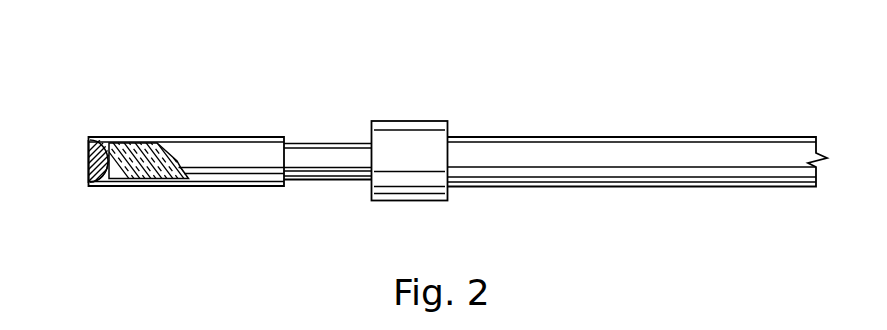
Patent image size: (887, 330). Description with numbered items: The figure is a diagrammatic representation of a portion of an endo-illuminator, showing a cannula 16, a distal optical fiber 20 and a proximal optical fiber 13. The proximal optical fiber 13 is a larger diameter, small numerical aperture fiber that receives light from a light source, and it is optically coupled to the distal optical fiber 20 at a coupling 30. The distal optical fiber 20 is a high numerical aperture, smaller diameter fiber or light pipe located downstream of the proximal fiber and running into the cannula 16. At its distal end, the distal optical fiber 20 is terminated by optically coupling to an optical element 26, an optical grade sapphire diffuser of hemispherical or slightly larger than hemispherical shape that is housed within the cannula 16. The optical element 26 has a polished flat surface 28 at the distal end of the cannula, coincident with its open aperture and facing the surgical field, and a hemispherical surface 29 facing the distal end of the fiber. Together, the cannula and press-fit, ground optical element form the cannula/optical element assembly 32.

The proximal optical fiber 13 is at (641, 137).
The cannula 16 is at (236, 137).
The distal optical fiber 20 is at (132, 136).
The optical element 26 is at (88, 141).
The polished flat surface 28 is at (88, 167).
The hemispherical surface 29 is at (103, 178).
The coupling 30 is at (412, 121).
The cannula/optical element assembly 32 is at (158, 114).